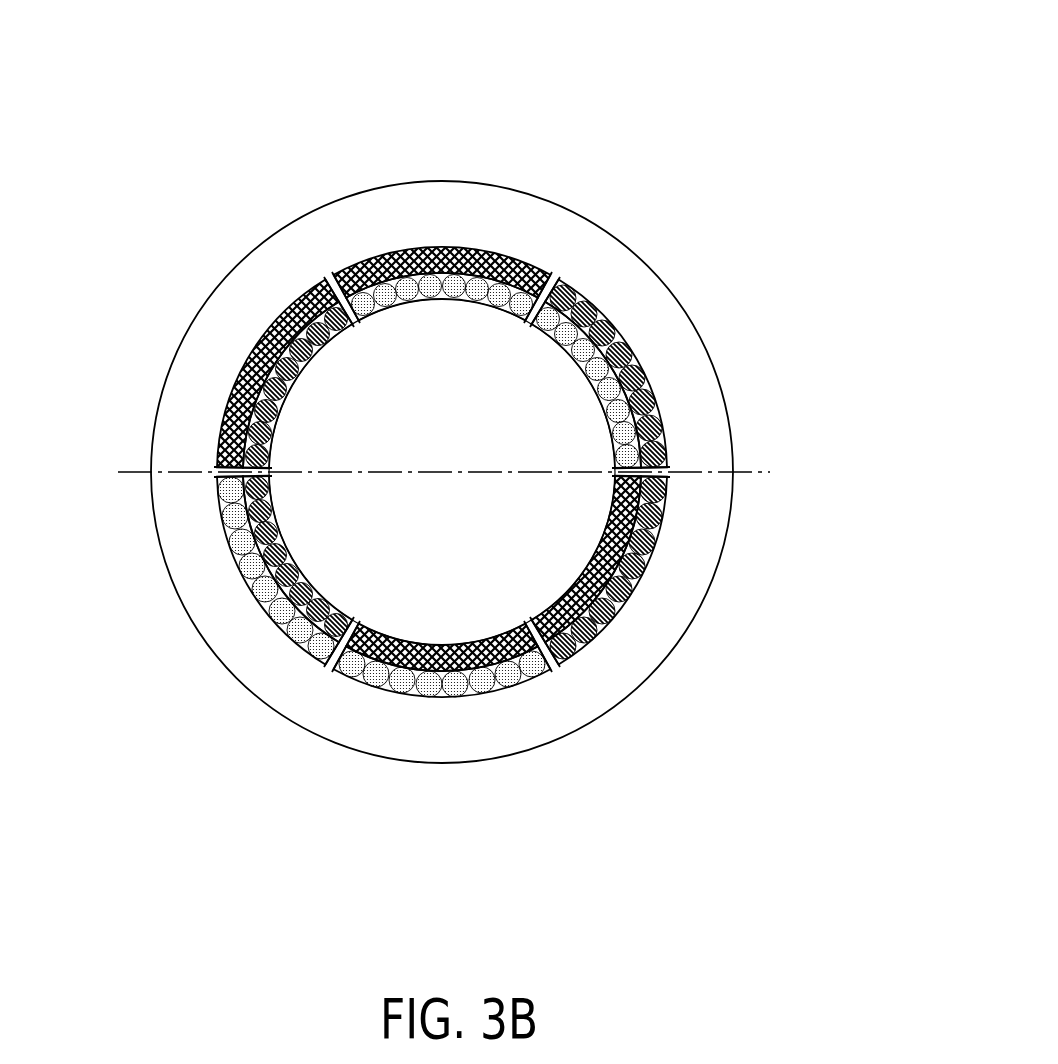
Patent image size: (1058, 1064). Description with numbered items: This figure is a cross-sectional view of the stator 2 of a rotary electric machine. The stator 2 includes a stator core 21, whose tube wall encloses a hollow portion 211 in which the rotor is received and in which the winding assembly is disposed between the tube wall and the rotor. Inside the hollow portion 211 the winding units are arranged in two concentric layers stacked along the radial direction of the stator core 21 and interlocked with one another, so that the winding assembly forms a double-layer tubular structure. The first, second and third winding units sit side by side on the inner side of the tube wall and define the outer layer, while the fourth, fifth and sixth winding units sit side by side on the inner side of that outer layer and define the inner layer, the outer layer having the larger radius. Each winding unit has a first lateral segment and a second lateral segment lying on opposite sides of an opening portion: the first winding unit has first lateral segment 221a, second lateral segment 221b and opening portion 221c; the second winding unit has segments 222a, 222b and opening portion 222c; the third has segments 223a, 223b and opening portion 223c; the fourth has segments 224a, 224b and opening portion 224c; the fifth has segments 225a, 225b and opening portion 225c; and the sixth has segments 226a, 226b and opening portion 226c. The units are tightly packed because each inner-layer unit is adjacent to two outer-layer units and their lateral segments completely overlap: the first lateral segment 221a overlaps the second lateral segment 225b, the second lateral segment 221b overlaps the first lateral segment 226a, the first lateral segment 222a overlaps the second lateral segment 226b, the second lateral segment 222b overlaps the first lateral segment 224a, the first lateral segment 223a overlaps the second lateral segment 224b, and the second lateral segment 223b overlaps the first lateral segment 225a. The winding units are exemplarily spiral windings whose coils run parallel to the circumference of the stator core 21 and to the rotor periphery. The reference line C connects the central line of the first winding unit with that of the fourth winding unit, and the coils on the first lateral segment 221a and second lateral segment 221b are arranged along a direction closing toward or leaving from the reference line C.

The stator 2 is at (797, 46).
The stator core 21 is at (375, 732).
The hollow portion 211 is at (423, 367).
The reference line C is at (457, 473).
The first lateral segment of the first winding unit 221a is at (635, 353).
The second lateral segment of the first winding unit 221b is at (670, 613).
The opening portion of the first winding unit 221c is at (660, 472).
The first lateral segment of the second winding unit 222a is at (418, 697).
The second lateral segment of the second winding unit 222b is at (212, 579).
The opening portion of the second winding unit 222c is at (333, 663).
The first lateral segment of the third winding unit 223a is at (267, 325).
The second lateral segment of the third winding unit 223b is at (368, 263).
The opening portion of the third winding unit 223c is at (332, 281).
The first lateral segment of the fourth winding unit 224a is at (255, 580).
The second lateral segment of the fourth winding unit 224b is at (216, 345).
The opening portion of the fourth winding unit 224c is at (235, 474).
The first lateral segment of the fifth winding unit 225a is at (384, 211).
The second lateral segment of the fifth winding unit 225b is at (672, 333).
The opening portion of the fifth winding unit 225c is at (540, 305).
The first lateral segment of the sixth winding unit 226a is at (620, 617).
The second lateral segment of the sixth winding unit 226b is at (442, 746).
The opening portion of the sixth winding unit 226c is at (540, 643).